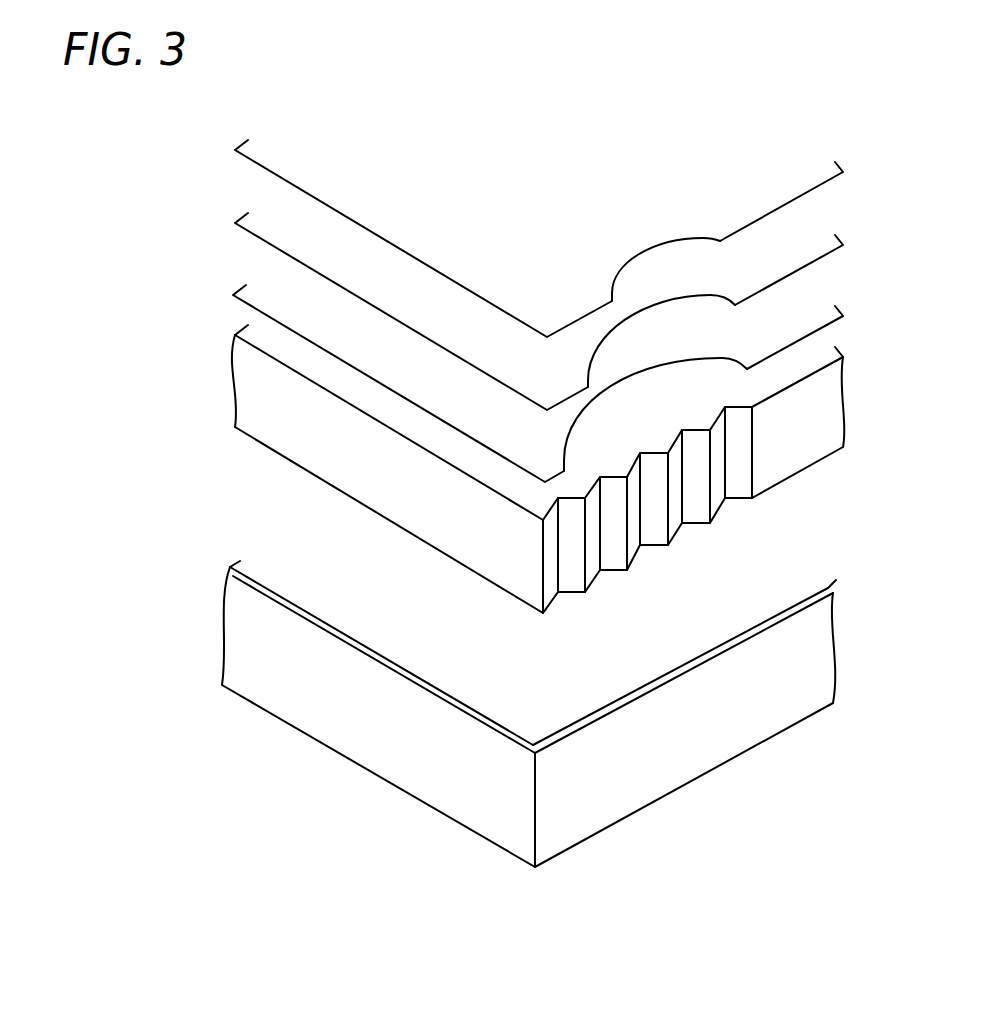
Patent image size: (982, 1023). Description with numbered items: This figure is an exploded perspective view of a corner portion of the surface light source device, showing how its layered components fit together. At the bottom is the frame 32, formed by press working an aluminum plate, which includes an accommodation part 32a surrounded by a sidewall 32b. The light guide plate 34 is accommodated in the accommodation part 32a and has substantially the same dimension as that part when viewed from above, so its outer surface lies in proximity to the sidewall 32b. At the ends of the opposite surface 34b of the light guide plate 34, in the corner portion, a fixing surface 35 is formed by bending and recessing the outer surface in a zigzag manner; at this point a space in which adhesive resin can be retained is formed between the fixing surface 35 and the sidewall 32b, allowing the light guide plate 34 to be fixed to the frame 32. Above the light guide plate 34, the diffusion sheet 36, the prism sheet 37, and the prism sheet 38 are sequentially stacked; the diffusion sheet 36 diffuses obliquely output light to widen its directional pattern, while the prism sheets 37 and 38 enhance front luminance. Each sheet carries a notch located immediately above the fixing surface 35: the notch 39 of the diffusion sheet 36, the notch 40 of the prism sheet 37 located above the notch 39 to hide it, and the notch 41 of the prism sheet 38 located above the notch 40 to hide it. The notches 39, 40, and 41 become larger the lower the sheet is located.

The frame 32 is at (513, 723).
The accommodation part 32a is at (443, 638).
The sidewall 32b is at (700, 660).
The light guide plate 34 is at (517, 473).
The opposite surface 34b is at (805, 452).
The fixing surface 35 is at (653, 522).
The diffusion sheet 36 is at (417, 397).
The prism sheet 37 is at (367, 297).
The prism sheet 38 is at (312, 192).
The notch 39 is at (642, 385).
The notch 40 is at (652, 313).
The notch 41 is at (655, 250).